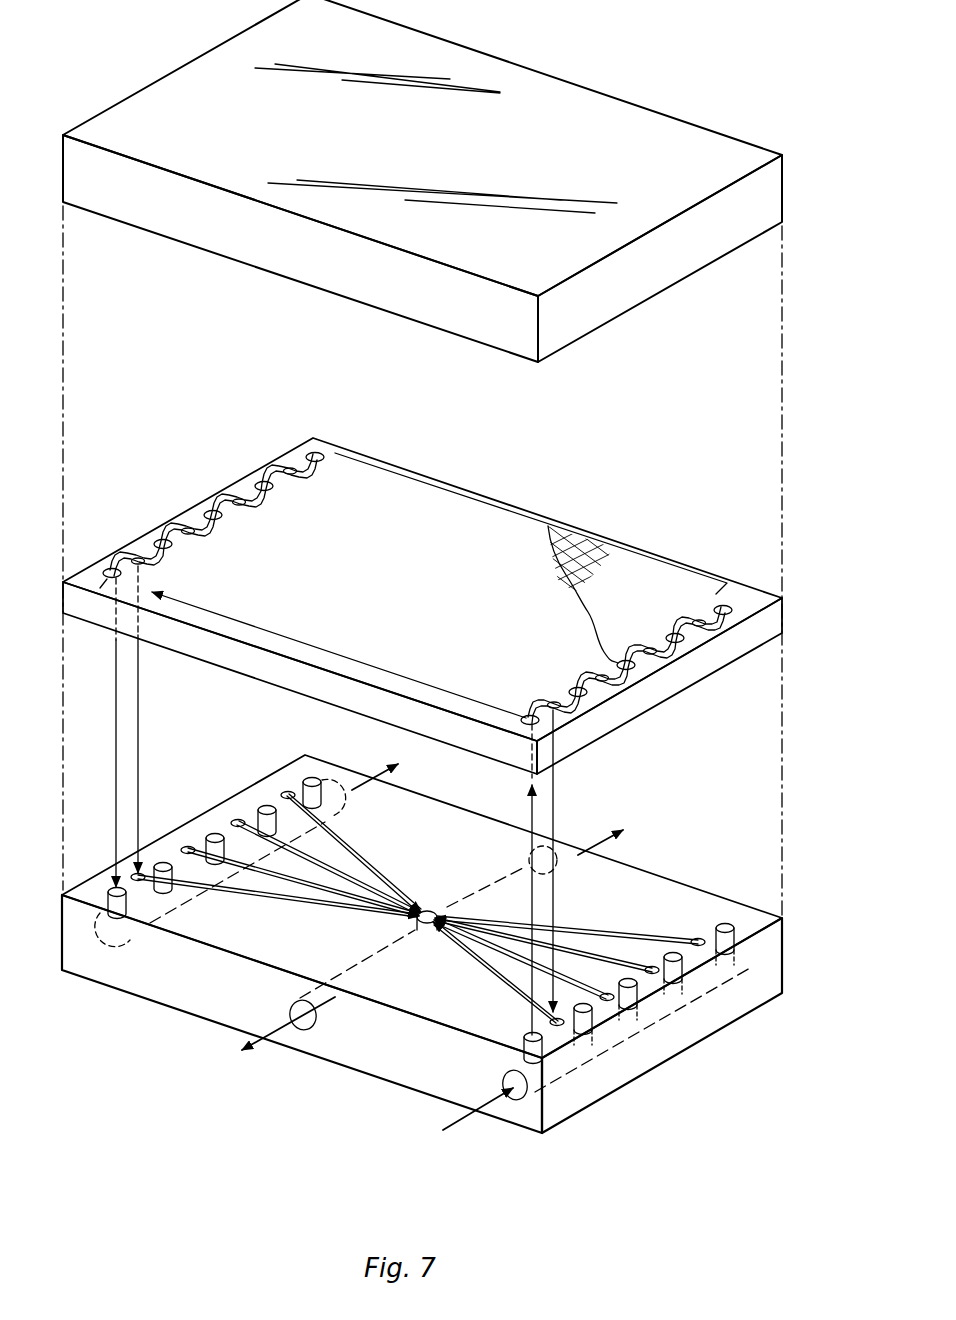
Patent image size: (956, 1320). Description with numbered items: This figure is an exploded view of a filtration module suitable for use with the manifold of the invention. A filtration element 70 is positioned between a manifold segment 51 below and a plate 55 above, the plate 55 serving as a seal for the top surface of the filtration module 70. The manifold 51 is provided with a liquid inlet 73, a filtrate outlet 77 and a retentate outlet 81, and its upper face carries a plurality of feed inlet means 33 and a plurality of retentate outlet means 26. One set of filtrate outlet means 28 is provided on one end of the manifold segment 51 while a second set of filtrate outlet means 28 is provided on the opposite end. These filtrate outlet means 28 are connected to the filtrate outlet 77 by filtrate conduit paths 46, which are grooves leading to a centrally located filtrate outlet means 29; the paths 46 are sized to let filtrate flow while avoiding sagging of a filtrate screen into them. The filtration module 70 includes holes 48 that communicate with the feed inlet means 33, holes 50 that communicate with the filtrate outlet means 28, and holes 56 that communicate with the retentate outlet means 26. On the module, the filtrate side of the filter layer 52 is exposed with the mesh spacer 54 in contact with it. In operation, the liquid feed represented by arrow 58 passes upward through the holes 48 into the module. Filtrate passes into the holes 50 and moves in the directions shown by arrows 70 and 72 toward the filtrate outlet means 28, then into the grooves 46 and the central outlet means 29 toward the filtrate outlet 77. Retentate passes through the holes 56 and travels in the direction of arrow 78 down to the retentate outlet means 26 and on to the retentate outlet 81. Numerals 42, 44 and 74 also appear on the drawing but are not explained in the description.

The retentate outlet means 26 is at (112, 888).
The filtrate outlet means 28 is at (286, 792).
The centrally located filtrate outlet means 29 is at (430, 910).
The feed inlet means 33 is at (723, 922).
The post 42 is at (527, 1030).
The conduits 44 is at (236, 838).
The filtrate conduit paths 46 is at (368, 880).
The holes 48 is at (677, 645).
The holes 50 is at (191, 535).
The manifold segment 51 is at (156, 1003).
The filter layer 52 is at (417, 600).
The mesh spacer 54 is at (580, 540).
The plate 55 is at (653, 108).
The holes 56 is at (312, 454).
The arrow 58 is at (528, 790).
The filtration module 70 is at (140, 712).
The arrow 72 is at (558, 818).
The liquid inlet 73 is at (516, 1102).
The channel 74 is at (525, 850).
The filtrate outlet 77 is at (303, 1030).
The arrow 78 is at (114, 715).
The retentate outlet 81 is at (271, 852).